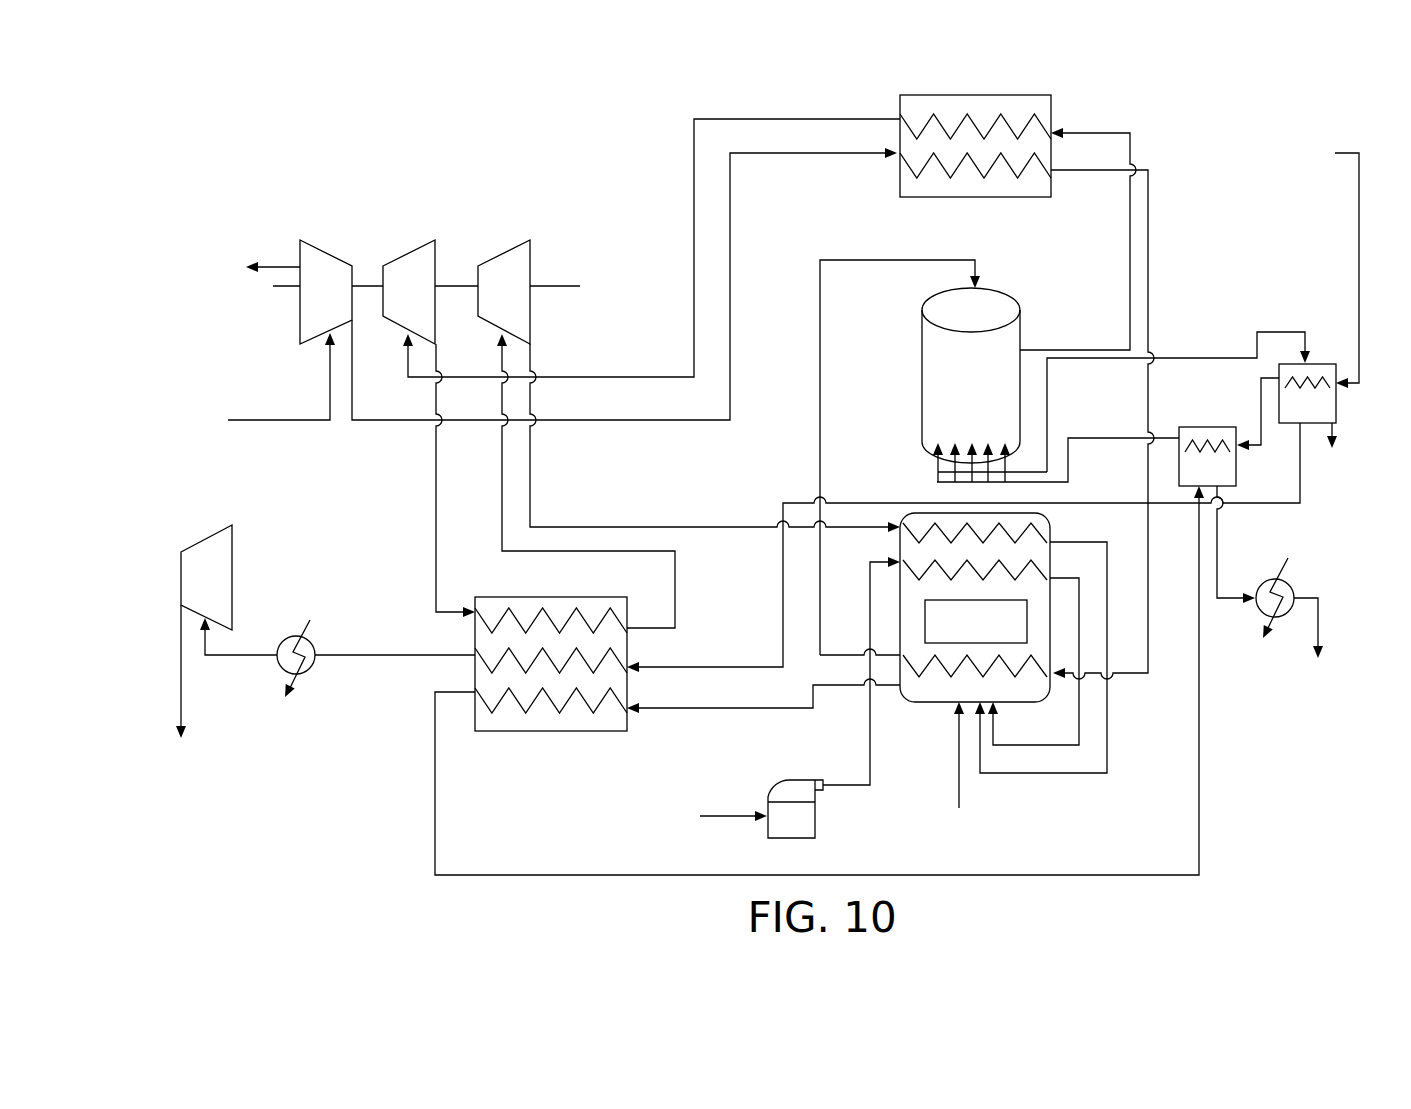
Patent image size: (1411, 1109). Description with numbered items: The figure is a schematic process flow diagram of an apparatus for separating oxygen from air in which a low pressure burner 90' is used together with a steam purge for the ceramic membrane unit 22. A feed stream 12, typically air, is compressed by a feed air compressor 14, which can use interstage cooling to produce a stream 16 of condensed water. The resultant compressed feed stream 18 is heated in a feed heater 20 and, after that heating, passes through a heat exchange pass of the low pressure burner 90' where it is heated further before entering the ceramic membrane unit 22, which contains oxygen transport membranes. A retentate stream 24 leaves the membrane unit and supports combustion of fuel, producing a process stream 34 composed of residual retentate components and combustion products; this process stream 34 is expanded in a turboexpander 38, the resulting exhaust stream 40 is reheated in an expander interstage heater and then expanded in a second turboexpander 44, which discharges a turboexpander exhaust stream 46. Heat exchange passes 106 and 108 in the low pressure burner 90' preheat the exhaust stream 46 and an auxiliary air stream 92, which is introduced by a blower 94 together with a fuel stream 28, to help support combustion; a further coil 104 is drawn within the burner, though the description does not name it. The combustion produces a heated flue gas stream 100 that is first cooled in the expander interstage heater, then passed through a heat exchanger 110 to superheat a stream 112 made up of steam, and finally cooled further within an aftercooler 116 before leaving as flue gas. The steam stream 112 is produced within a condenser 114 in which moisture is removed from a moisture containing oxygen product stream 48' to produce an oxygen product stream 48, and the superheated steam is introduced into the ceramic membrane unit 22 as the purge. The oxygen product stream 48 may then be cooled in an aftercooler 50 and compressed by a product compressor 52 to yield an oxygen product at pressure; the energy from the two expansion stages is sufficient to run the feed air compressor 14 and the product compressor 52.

The feed stream 12 is at (297, 427).
The feed air compressor 14 is at (328, 280).
The stream composed of condensed water 16 is at (275, 266).
The compressed feed stream 18 is at (731, 310).
The feed heater 20 is at (1008, 108).
The ceramic membrane unit 22 is at (925, 392).
The retentate stream 24 is at (1130, 285).
The fuel stream 28 is at (960, 795).
The process stream 34 is at (793, 118).
The turboexpander 38 is at (410, 275).
The exhaust stream 40 is at (437, 495).
The turboexpander 44 is at (500, 273).
The turboexpander exhaust stream 46 is at (742, 527).
The oxygen product stream 48 is at (963, 547).
The moisture containing oxygen product stream 48' is at (1178, 384).
The aftercooler 50 is at (312, 642).
The product compressor 52 is at (222, 570).
The low pressure burner 90' is at (973, 645).
The auxiliary air stream 92 is at (708, 817).
The blower 94 is at (802, 823).
The heated flue gas stream 100 is at (1199, 820).
The burner heat exchange coil 104 is at (1037, 660).
The heat exchange pass 106 is at (1050, 533).
The heat exchange pass 108 is at (1037, 562).
The heat exchanger 110 is at (1208, 427).
The stream made up of steam 112 is at (1262, 403).
The condenser 114 is at (1330, 412).
The aftercooler 116 is at (1288, 585).